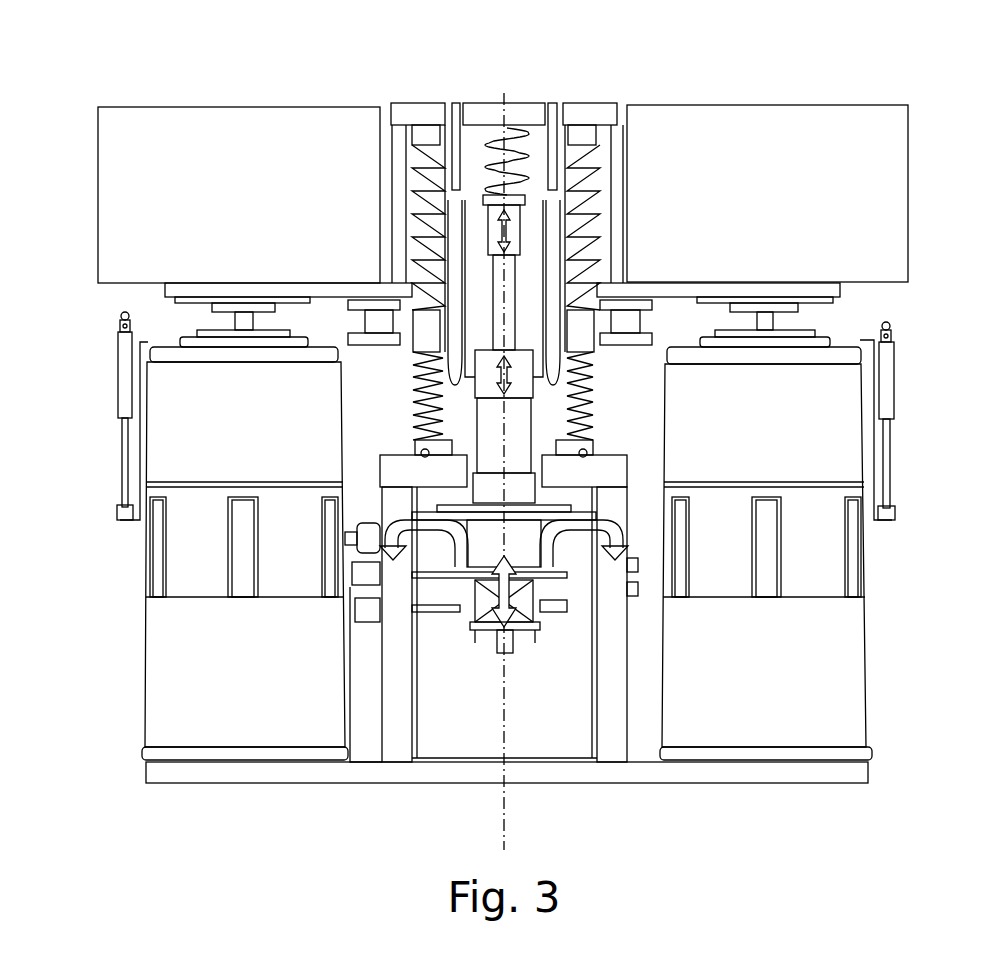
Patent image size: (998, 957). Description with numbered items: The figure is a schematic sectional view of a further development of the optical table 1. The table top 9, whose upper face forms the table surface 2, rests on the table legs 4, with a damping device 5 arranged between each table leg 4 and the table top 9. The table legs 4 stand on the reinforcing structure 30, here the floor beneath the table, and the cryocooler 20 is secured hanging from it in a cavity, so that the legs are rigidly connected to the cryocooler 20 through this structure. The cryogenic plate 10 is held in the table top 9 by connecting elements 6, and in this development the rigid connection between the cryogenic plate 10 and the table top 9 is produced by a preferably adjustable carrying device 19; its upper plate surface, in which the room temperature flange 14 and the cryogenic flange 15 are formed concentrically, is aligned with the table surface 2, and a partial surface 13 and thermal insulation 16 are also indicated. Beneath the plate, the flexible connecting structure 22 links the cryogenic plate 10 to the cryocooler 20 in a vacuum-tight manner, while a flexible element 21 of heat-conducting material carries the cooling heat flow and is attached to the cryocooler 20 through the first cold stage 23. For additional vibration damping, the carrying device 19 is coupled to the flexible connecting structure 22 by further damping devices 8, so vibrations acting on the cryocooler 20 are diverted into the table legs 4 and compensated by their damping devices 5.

The optical table 1 is at (255, 70).
The table surface 2 is at (503, 158).
The table legs 4 is at (122, 611).
The damping device 5 is at (172, 345).
The connecting element 6 is at (593, 427).
The further damping devices 8 is at (622, 307).
The table top 9 is at (249, 205).
The cryogenic plate 10 is at (396, 107).
The partial surface 13 is at (482, 103).
The room temperature flange 14 is at (408, 105).
The cryogenic flange 15 is at (456, 103).
The thermal insulation 16 is at (518, 222).
The carrying device 19 is at (840, 287).
The cryocooler 20 is at (598, 232).
The flexible element 21 is at (522, 135).
The flexible connecting structure 22 is at (612, 270).
The first cold stage 23 is at (593, 403).
The reinforcing structure 30 is at (400, 698).